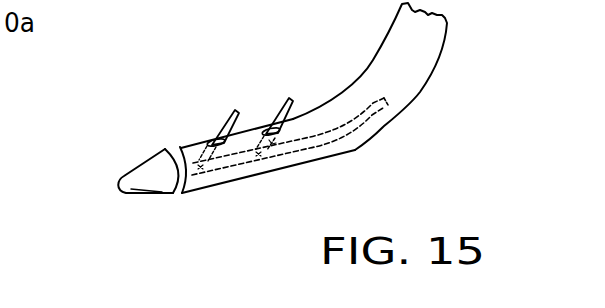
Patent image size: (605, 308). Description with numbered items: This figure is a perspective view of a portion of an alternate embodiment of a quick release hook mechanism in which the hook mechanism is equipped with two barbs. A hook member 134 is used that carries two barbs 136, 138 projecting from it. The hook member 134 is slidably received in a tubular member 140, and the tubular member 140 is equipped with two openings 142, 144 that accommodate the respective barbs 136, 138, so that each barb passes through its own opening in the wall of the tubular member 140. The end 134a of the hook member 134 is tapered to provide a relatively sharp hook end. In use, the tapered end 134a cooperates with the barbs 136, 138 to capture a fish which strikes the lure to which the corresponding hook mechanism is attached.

The hook member 134 is at (334, 133).
The end 134a is at (128, 176).
The barb 136 is at (229, 125).
The barb 138 is at (286, 112).
The tubular member 140 is at (421, 53).
The opening 142 is at (212, 144).
The opening 144 is at (287, 133).